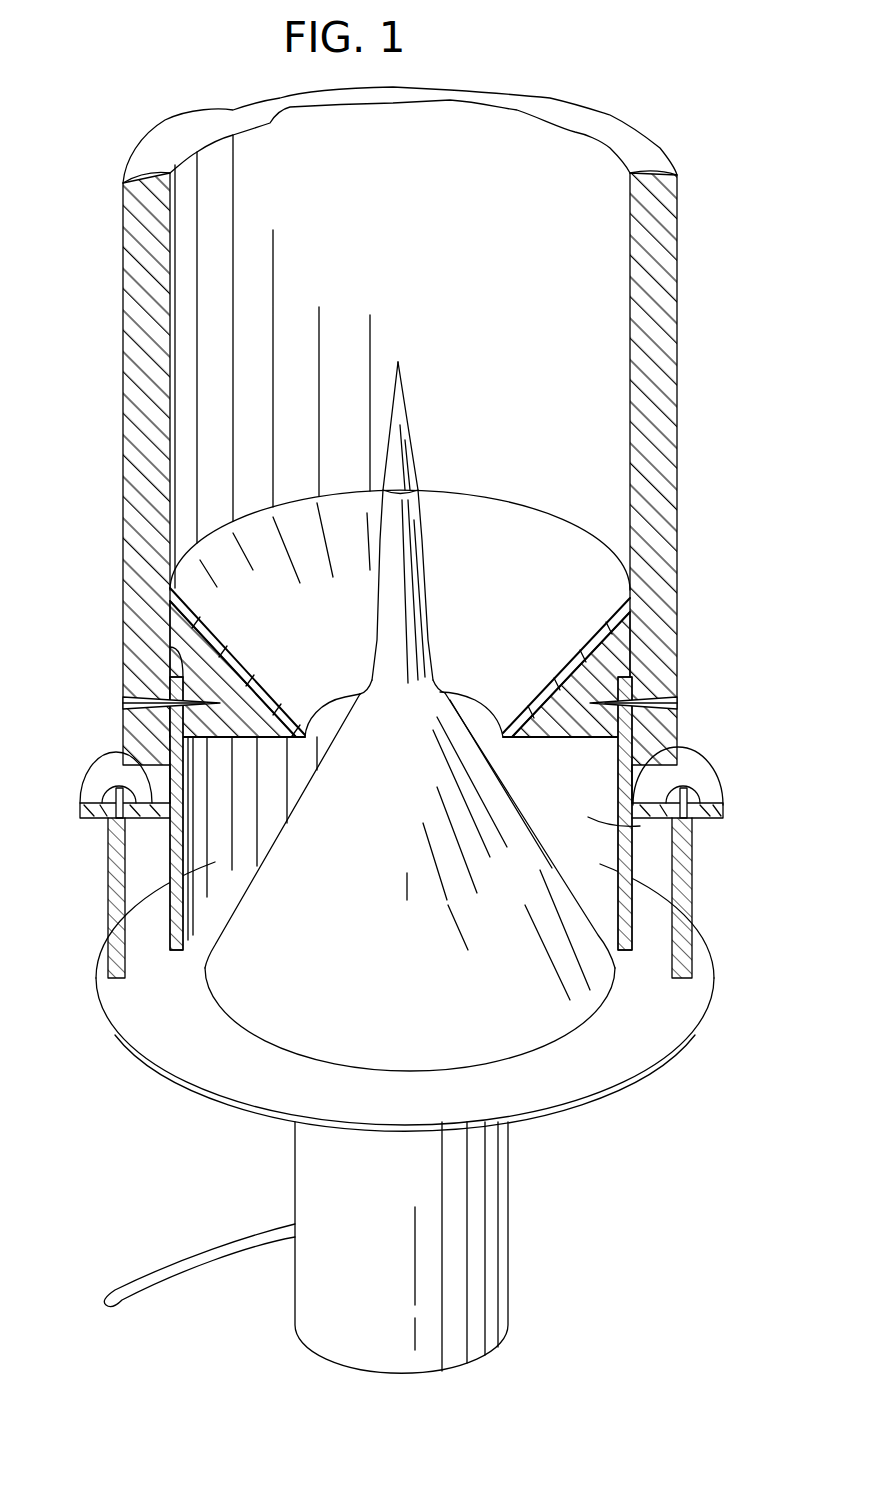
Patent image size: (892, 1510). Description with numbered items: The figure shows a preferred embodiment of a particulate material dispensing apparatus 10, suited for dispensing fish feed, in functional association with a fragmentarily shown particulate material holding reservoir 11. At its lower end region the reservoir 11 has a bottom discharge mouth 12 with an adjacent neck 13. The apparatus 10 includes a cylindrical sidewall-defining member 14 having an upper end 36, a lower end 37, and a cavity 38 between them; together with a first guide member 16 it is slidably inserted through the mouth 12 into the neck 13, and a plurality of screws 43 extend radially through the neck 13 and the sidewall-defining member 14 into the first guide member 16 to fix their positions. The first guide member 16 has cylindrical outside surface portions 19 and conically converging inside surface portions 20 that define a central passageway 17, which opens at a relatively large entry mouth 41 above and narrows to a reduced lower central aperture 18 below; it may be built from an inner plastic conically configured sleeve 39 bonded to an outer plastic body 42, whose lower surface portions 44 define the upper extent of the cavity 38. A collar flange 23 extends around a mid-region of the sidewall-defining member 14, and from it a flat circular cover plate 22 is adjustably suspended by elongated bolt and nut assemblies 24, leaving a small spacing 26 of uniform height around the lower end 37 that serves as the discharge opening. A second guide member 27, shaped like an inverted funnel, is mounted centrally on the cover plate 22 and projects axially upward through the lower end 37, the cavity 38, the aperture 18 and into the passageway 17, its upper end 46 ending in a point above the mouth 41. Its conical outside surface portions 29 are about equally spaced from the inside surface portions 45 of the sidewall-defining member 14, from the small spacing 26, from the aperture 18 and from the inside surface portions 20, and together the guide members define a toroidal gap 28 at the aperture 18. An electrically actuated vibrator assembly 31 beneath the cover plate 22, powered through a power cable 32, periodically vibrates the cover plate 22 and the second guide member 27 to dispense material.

The particulate material dispensing apparatus 10 is at (378, 305).
The particulate material holding reservoir 11 is at (347, 197).
The bottom discharge mouth 12 is at (680, 770).
The neck 13 is at (630, 372).
The sidewall-defining member 14 is at (180, 860).
The first guide member 16 is at (227, 680).
The central passageway 17 is at (372, 614).
The lower central aperture 18 is at (490, 722).
The outside surface portions 19 is at (633, 612).
The inside surface portions 20 is at (262, 727).
The cover plate 22 is at (212, 1075).
The collar flange 23 is at (110, 773).
The bolt and nut assemblies 24 is at (120, 876).
The small spacing 26 is at (184, 967).
The second guide member 27 is at (400, 994).
The toroidally configured gap 28 is at (337, 718).
The outside surface portions 29 is at (545, 868).
The vibrator assembly 31 is at (490, 1198).
The power cable 32 is at (232, 1250).
The upper end 36 is at (170, 646).
The lower end 37 is at (184, 967).
The cavity 38 is at (723, 814).
The inner plastic conically configured sleeve 39 is at (566, 633).
The entry mouth 41 is at (573, 553).
The outer plastic body 42 is at (610, 650).
The screws 43 is at (652, 692).
The lower surface portions 44 is at (590, 737).
The inside surface portions 45 is at (618, 850).
The upper end 46 is at (398, 362).